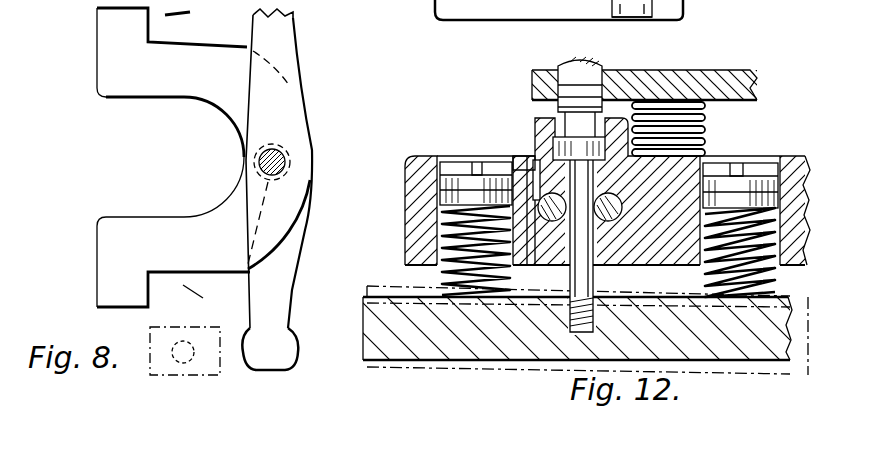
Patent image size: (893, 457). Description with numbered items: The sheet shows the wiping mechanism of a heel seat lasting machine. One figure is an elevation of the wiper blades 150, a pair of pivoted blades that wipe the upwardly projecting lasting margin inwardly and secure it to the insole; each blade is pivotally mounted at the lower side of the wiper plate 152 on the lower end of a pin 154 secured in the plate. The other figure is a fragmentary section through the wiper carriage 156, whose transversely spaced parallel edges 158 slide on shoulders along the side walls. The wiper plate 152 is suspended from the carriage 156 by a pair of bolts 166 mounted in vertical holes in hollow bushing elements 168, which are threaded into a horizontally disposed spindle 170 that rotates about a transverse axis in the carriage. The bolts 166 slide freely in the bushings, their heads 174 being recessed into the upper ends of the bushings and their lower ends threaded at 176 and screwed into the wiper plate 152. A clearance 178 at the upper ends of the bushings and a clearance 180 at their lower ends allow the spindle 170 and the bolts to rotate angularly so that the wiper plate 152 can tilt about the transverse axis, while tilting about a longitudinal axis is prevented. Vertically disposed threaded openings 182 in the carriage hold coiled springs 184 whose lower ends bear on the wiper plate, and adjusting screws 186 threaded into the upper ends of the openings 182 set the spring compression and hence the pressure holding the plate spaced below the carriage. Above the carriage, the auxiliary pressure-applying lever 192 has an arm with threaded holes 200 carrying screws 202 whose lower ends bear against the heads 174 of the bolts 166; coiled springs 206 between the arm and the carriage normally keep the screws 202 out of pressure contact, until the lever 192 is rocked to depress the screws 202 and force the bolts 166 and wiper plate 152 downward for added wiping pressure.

In FIG. 8, the wiper blades 150 is at (142, 88).
In FIG. 8, the pin 154 is at (262, 160).
In FIG. 12, the wiper plate 152 is at (390, 352).
In FIG. 12, the wiper carriage 156 is at (783, 157).
In FIG. 12, the edges 158 is at (683, 8).
In FIG. 12, the bolts 166 is at (552, 150).
In FIG. 12, the hollow bushing elements 168 is at (540, 128).
In FIG. 12, the spindle 170 is at (603, 248).
In FIG. 12, the heads 174 is at (560, 140).
In FIG. 12, the threaded lower ends 176 is at (541, 352).
In FIG. 12, the clearance 178 is at (533, 151).
In FIG. 12, the clearance 180 is at (539, 279).
In FIG. 12, the threaded openings 182 is at (443, 157).
In FIG. 12, the coiled springs 184 is at (405, 248).
In FIG. 12, the adjusting screws 186 is at (443, 158).
In FIG. 12, the lever 192 is at (680, 70).
In FIG. 12, the threaded holes 200 is at (572, 52).
In FIG. 12, the screws 202 is at (604, 64).
In FIG. 12, the coiled springs 206 is at (707, 114).